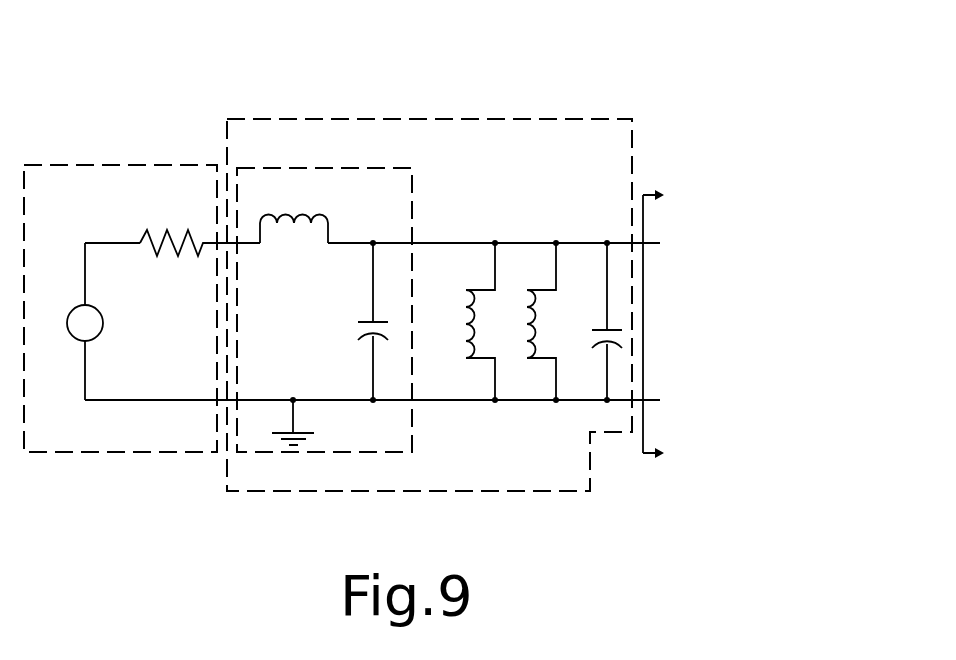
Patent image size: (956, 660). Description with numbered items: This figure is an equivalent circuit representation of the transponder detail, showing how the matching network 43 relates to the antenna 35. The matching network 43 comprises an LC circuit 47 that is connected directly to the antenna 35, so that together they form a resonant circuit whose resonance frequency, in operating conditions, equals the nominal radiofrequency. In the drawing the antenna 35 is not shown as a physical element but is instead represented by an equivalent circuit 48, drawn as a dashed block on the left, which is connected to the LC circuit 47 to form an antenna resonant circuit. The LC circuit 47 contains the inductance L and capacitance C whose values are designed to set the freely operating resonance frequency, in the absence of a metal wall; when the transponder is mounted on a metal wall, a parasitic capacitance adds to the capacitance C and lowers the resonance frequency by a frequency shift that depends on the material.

The antenna 35 is at (137, 108).
The equivalent circuit 48 is at (165, 453).
The LC circuit 47 is at (352, 453).
The matching network 43 is at (548, 487).